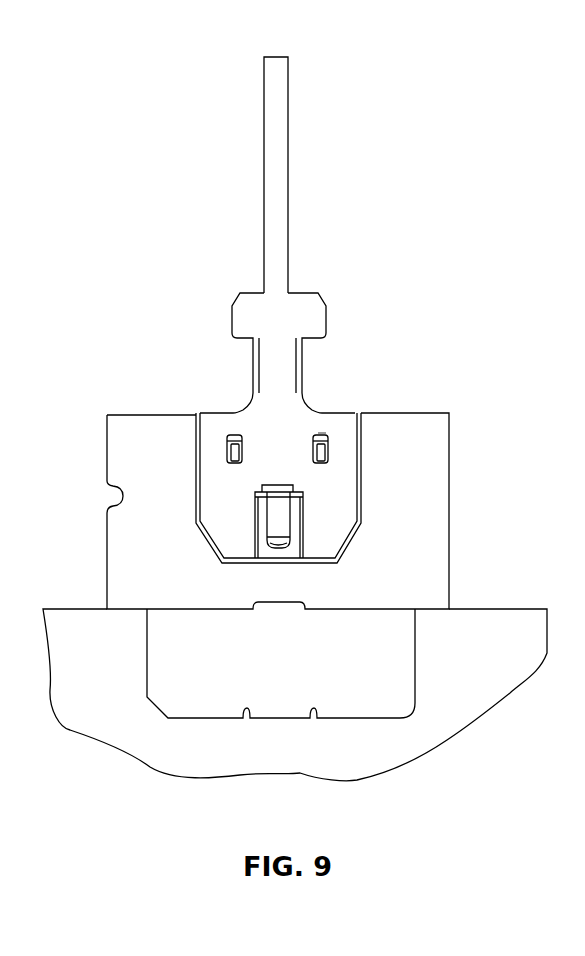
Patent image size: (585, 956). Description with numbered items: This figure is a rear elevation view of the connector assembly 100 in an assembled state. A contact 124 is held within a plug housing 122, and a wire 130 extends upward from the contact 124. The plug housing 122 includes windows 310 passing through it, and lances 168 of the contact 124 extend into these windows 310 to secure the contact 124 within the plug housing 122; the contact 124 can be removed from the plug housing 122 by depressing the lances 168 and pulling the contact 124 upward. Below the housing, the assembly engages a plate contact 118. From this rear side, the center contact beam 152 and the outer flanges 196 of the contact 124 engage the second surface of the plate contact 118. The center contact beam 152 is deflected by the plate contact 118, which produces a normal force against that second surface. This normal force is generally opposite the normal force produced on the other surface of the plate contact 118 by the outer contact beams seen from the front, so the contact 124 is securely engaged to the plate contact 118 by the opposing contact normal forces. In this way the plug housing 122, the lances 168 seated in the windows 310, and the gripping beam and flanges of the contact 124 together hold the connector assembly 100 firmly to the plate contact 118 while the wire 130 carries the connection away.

The connector assembly 100 is at (195, 58).
The plate contact 118 is at (390, 678).
The plug housing 122 is at (228, 423).
The contact 124 is at (278, 504).
The wire 130 is at (275, 175).
The center contact beam 152 is at (279, 520).
The lances 168 is at (329, 452).
The outer flanges 196 is at (322, 545).
The windows 310 is at (321, 436).